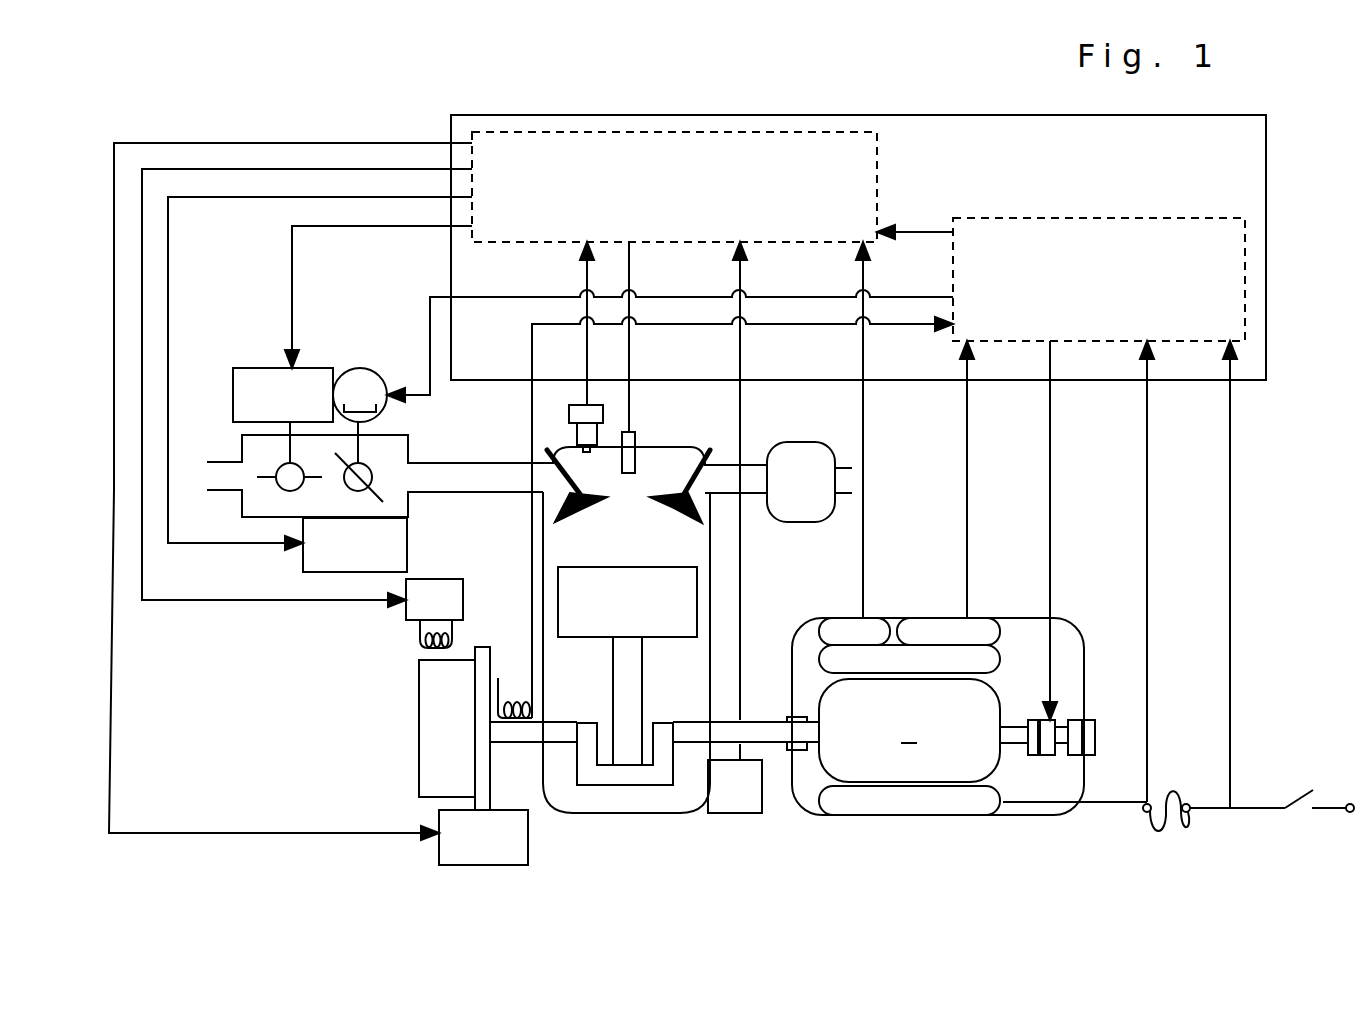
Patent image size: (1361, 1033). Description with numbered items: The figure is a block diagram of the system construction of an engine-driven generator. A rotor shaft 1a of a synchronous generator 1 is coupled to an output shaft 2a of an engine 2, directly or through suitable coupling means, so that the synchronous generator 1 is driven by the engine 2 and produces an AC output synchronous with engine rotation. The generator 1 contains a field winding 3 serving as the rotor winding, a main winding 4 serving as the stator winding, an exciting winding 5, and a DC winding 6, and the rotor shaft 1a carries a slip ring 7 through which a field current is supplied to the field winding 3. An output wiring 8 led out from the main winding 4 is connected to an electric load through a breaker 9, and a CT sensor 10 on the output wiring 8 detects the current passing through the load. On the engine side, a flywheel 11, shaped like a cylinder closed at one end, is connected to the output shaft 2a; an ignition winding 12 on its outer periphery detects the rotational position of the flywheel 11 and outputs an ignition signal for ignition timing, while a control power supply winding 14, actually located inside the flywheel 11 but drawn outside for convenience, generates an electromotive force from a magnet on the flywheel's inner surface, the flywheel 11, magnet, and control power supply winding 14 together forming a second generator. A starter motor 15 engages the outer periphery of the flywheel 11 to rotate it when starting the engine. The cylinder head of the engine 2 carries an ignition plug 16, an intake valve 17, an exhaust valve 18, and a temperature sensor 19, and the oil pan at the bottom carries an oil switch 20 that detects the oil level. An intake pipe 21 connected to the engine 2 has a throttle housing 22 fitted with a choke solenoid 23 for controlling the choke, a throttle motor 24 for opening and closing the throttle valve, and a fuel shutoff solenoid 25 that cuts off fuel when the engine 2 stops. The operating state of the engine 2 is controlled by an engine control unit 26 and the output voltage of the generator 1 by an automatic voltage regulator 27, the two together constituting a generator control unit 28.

The synchronous generator 1 is at (1010, 815).
The rotor shaft 1a is at (1095, 737).
The engine 2 is at (655, 813).
The output shaft 2a is at (745, 712).
The field winding 3 is at (909, 730).
The main winding 4 is at (978, 650).
The exciting winding 5 is at (938, 626).
The DC winding 6 is at (843, 626).
The slip ring 7 is at (1038, 757).
The output wiring 8 is at (1208, 812).
The breaker 9 is at (1292, 790).
The CT sensor 10 is at (1168, 792).
The flywheel 11 is at (419, 757).
The ignition winding 12 is at (417, 637).
The control power supply winding 14 is at (530, 735).
The starter motor 15 is at (528, 840).
The ignition plug 16 is at (637, 436).
The intake valve 17 is at (578, 510).
The exhaust valve 18 is at (690, 478).
The temperature sensor 19 is at (568, 421).
The oil switch 20 is at (718, 813).
The intake pipe 21 is at (469, 492).
The throttle housing 22 is at (410, 444).
The choke solenoid 23 is at (252, 366).
The throttle motor 24 is at (362, 369).
The fuel shutoff solenoid 25 is at (303, 560).
The engine control unit 26 is at (877, 190).
The automatic voltage regulator 27 is at (1145, 219).
The generator control unit 28 is at (1266, 195).